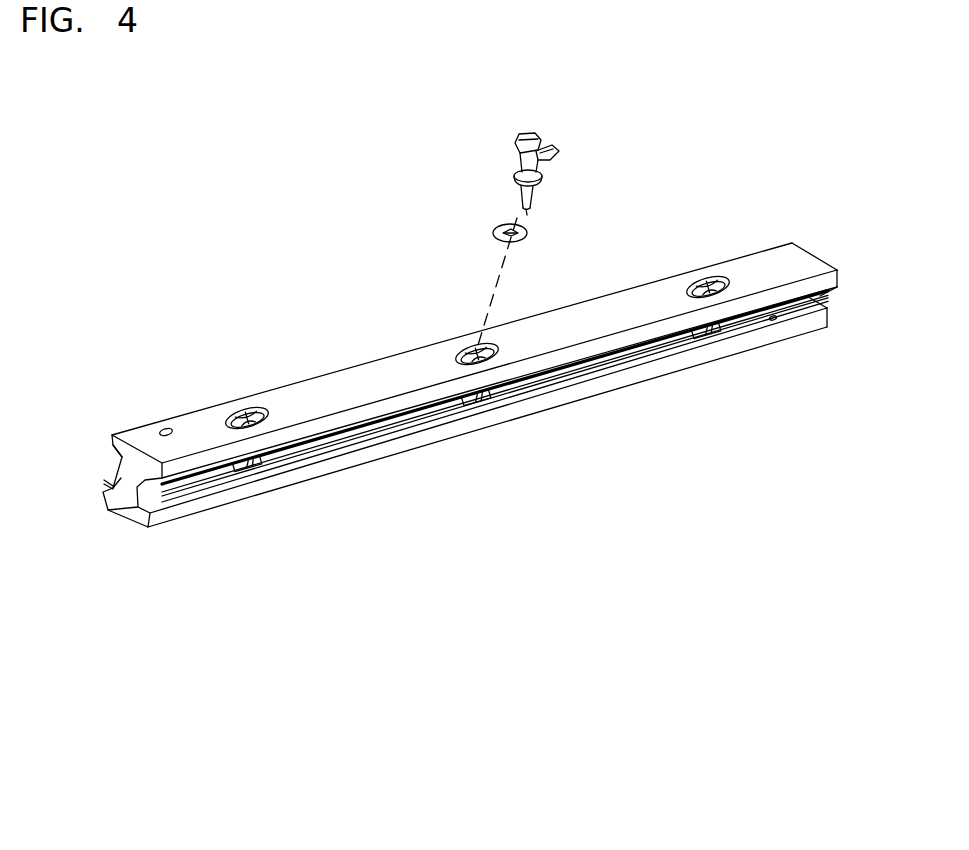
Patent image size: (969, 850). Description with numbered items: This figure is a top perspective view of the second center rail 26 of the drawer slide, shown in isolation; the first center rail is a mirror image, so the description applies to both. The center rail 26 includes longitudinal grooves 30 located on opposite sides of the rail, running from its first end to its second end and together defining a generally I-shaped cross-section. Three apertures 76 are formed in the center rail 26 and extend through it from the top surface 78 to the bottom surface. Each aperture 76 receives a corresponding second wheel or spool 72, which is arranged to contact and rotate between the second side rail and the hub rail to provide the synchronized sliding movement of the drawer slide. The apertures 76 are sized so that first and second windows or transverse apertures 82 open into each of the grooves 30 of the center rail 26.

The second center rail 26 is at (248, 177).
The longitudinal grooves 30 is at (104, 472).
The second wheel or spool 72 is at (610, 108).
The aperture 76 is at (240, 417).
The top surface 78 is at (375, 388).
The windows or transverse apertures 82 is at (252, 468).